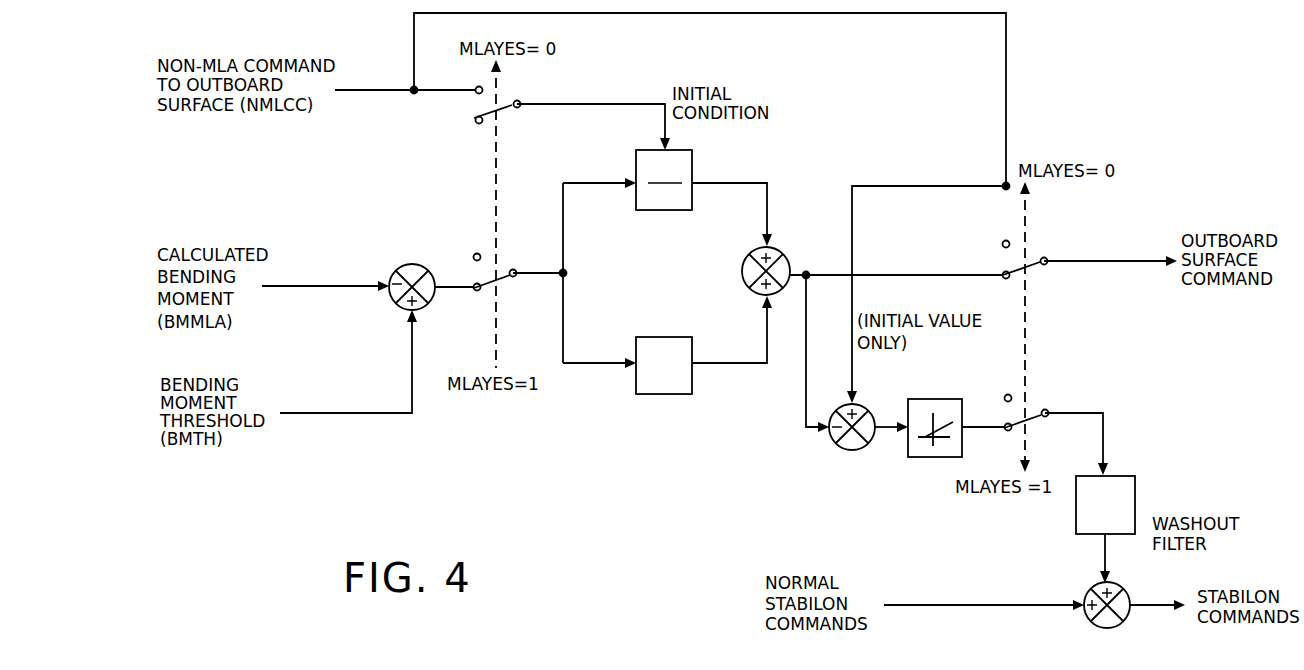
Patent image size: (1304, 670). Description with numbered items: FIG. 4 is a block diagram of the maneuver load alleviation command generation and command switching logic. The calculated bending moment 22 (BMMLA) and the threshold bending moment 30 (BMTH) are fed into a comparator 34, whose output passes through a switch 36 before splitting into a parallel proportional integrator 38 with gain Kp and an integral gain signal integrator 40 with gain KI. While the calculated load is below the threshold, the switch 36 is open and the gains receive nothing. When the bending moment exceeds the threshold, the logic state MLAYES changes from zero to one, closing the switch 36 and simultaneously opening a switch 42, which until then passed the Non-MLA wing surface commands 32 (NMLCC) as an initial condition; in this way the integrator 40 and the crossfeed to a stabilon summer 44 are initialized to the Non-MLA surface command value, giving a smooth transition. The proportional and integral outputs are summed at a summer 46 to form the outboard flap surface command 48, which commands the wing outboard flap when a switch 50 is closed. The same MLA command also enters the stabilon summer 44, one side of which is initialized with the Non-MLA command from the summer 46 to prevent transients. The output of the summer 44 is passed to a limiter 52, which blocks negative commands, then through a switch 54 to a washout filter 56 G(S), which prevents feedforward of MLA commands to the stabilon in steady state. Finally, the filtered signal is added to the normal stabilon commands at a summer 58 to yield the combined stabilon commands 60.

The calculated bending moment 22 is at (347, 283).
The threshold bending moment 30 is at (349, 412).
The Non-MLA wing surface commands 32 is at (378, 88).
The comparator 34 is at (412, 262).
The switch 36 is at (497, 285).
The proportional integrator 38 is at (667, 395).
The integral gain signal integrator 40 is at (693, 158).
The switch 42 is at (500, 112).
The stabilon summer 44 is at (848, 452).
The summer 46 is at (742, 268).
The outboard flap surface command 48 is at (1120, 263).
The switch 50 is at (1030, 268).
The limiter 52 is at (918, 460).
The switch 54 is at (1033, 420).
The washout filter 56 is at (1137, 498).
The summer 58 is at (1090, 620).
The combined stabilon commands 60 is at (1143, 606).